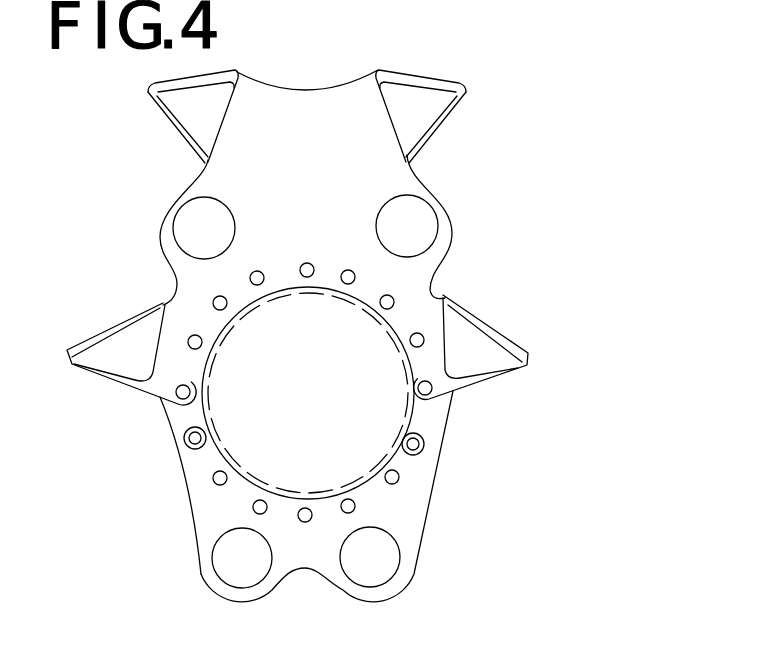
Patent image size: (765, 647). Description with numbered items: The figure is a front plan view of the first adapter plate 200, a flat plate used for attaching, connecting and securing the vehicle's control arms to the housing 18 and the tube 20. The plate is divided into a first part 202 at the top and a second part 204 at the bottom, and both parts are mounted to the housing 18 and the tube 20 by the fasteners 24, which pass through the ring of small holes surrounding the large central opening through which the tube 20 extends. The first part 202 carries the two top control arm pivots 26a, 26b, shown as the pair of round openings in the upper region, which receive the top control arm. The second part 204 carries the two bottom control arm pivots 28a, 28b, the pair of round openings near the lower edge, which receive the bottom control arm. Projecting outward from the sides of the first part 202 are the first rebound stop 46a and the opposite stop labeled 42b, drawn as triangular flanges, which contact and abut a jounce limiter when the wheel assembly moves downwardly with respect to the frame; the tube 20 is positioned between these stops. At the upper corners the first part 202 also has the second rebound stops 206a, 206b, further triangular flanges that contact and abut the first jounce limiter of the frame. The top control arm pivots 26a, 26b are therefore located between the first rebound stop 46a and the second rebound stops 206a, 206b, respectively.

The first adapter plate 200 is at (518, 103).
The housing 18 is at (175, 449).
The tube 20 is at (370, 342).
The fasteners 24 is at (251, 277).
The top control arm pivot 26a is at (193, 218).
The top control arm pivot 26b is at (423, 232).
The bottom control arm pivot 28a is at (230, 570).
The bottom control arm pivot 28b is at (372, 572).
The right lower flange 42b is at (506, 325).
The first rebound stop 46a is at (112, 327).
The first part 202 is at (347, 123).
The second part 204 is at (400, 515).
The second rebound stop 206a is at (168, 117).
The second rebound stop 206b is at (440, 127).